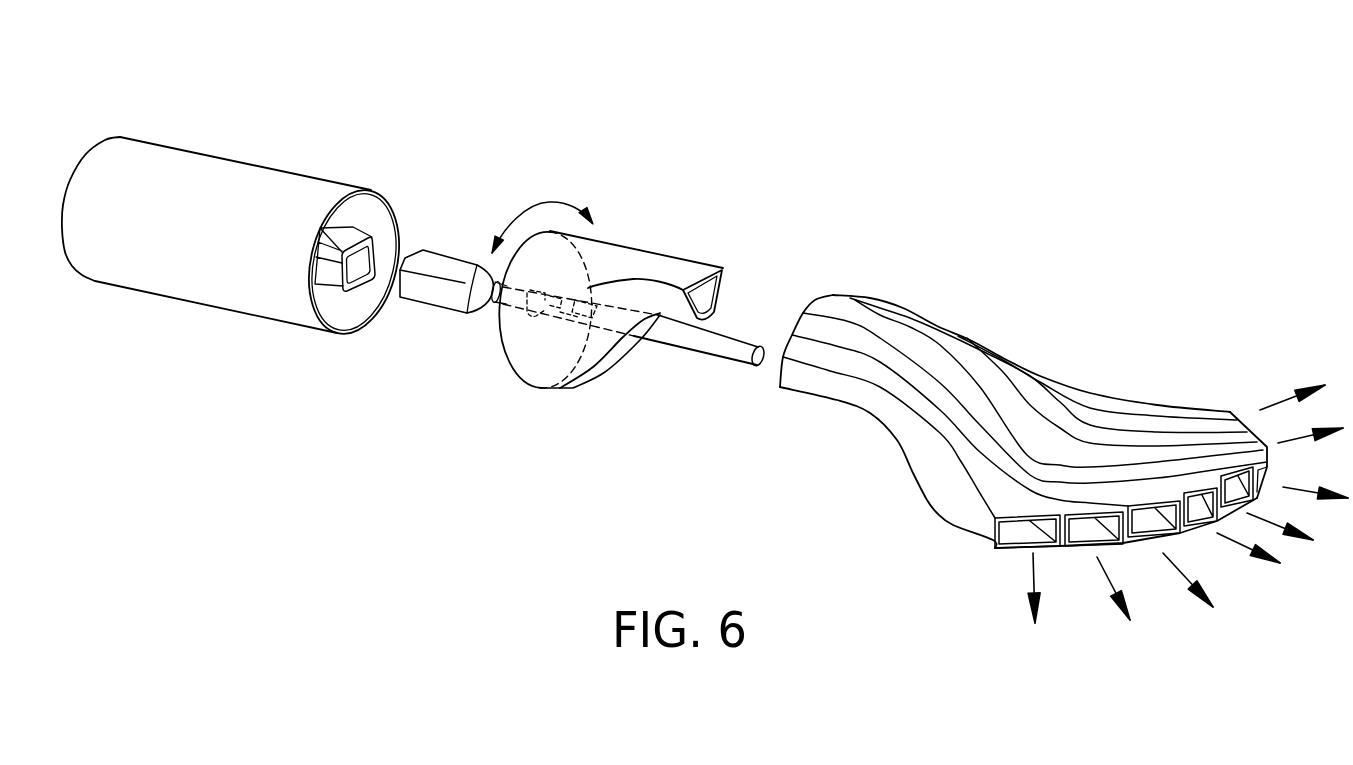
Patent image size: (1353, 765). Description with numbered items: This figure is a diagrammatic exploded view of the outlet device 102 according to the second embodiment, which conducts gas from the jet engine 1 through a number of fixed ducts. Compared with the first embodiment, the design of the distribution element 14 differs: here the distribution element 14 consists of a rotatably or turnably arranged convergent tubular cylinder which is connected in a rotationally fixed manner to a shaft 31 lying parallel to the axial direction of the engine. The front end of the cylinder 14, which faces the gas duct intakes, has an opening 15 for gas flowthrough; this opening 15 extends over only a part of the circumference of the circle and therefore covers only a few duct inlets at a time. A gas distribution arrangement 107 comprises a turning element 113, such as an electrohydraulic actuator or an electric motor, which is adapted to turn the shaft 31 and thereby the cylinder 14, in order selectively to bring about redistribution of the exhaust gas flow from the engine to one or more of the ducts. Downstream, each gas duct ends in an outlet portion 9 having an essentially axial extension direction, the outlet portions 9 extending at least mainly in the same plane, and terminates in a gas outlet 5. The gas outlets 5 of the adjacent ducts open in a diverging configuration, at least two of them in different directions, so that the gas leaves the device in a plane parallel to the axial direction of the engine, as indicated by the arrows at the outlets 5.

The jet engine 1 is at (258, 122).
The gas distribution arrangement 107 is at (547, 160).
The outlet device 102 is at (1064, 361).
The opening 15 is at (707, 287).
The turning element 113 is at (437, 290).
The shaft 31 is at (495, 297).
The distribution element 14 is at (535, 415).
The outlet portion 9 is at (972, 492).
The gas outlet 5 is at (1165, 532).